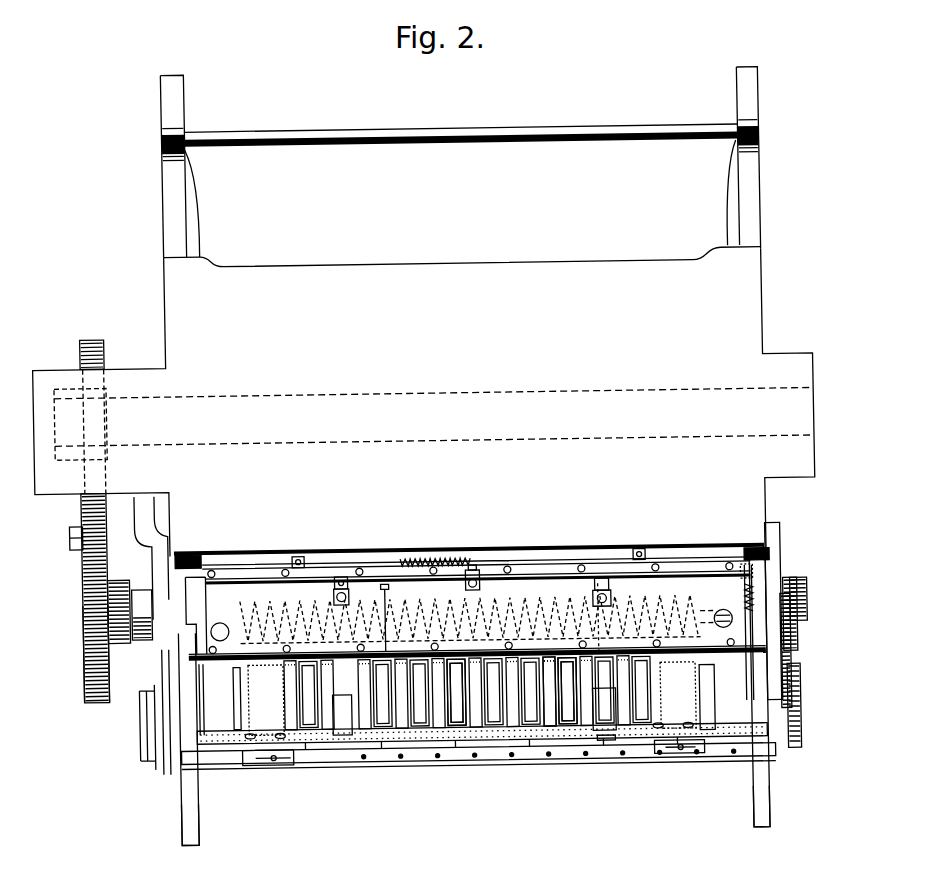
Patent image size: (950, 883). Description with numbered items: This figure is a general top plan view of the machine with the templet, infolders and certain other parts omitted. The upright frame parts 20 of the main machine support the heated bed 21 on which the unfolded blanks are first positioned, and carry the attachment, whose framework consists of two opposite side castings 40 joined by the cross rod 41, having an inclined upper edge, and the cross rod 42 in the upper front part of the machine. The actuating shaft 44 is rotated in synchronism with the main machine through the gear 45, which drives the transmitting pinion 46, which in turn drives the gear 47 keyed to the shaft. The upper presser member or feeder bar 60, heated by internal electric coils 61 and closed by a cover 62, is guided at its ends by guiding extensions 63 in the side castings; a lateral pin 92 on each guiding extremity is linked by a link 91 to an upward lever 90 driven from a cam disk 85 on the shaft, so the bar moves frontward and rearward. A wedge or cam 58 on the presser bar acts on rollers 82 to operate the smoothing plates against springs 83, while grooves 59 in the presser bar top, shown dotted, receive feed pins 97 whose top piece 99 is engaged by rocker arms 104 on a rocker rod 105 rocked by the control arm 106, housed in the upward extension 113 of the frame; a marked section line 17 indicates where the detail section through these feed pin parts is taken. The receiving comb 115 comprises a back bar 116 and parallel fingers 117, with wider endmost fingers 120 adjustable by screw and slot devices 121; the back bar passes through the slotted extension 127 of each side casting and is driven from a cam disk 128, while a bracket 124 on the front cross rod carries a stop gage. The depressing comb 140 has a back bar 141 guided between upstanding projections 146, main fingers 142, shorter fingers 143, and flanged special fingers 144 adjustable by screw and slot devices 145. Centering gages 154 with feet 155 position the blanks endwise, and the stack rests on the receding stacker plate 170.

The center line / axis of adjustment 17 is at (599, 560).
The frame parts 20 is at (460, 167).
The bed 21 is at (423, 405).
The side castings 40 is at (185, 700).
The cross rod 41 is at (526, 663).
The cross rod 42 is at (551, 725).
The actuating shaft 44 is at (105, 608).
The gear 45 is at (100, 338).
The pinion 46 is at (83, 516).
The gear 47 is at (85, 665).
The wedge or cam 58 is at (467, 553).
The grooves 59 is at (333, 623).
The feeder bar 60 is at (387, 590).
The internal electric coils 61 is at (500, 590).
The cover 62 is at (210, 615).
The guiding extensions 63 is at (192, 602).
The roller 82 is at (483, 558).
The springs 83 is at (420, 563).
The cam disk 85 is at (779, 527).
The upward lever 90 is at (795, 700).
The link 91 is at (790, 636).
The lateral pin 92 is at (786, 580).
The feed pins 97 is at (612, 590).
The top piece 99 is at (346, 597).
The rocker arms 104 is at (323, 580).
The rocker rod 105 is at (270, 580).
The control arm 106 is at (745, 575).
The upward extension 113 is at (759, 557).
The receiving comb 115 is at (390, 762).
The back bar 116 is at (445, 755).
The fingers 117 is at (466, 747).
The endmost fingers 120 is at (268, 752).
The screw and slot devices 121 is at (278, 763).
The bracket 124 is at (347, 763).
The slotted extension 127 is at (188, 830).
The cam disk 128 is at (148, 648).
The depressing comb 140 is at (580, 735).
The back bar 141 is at (568, 718).
The fingers 142 is at (423, 762).
The fingers 143 is at (345, 700).
The special fingers 144 is at (472, 697).
The screw and slot devices 145 is at (248, 745).
The upstanding projections 146 is at (188, 752).
The centering gages 154 is at (238, 690).
The flanges or feet 155 is at (240, 708).
The stacker plate 170 is at (601, 673).